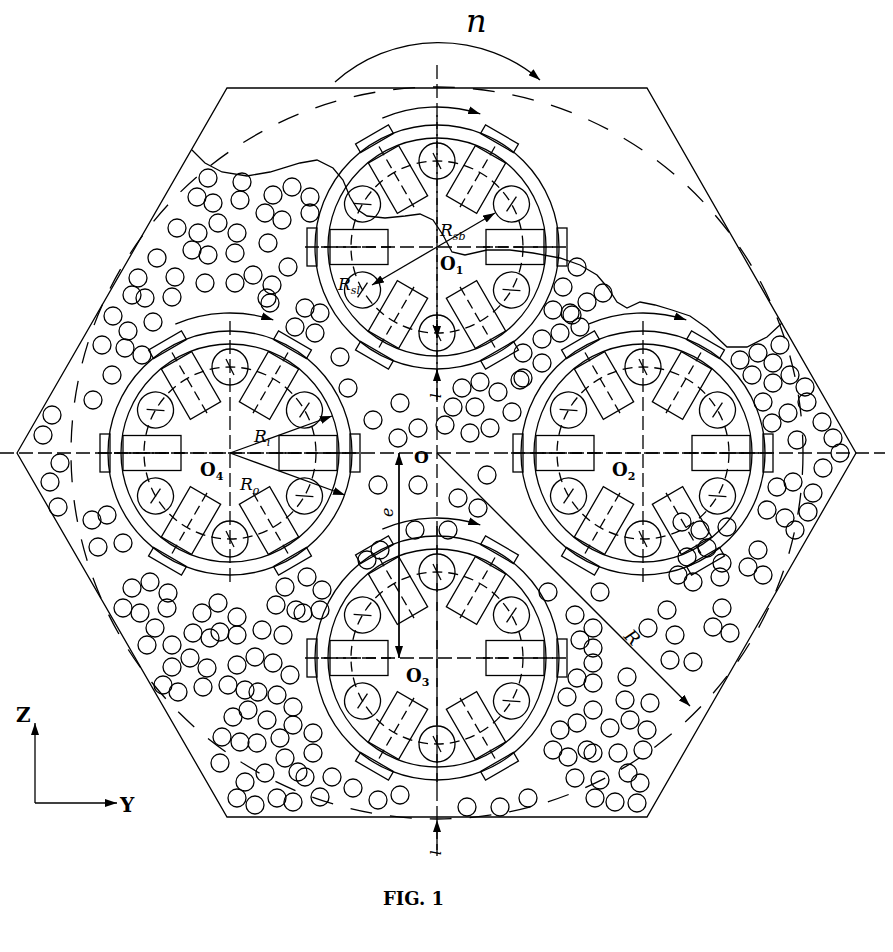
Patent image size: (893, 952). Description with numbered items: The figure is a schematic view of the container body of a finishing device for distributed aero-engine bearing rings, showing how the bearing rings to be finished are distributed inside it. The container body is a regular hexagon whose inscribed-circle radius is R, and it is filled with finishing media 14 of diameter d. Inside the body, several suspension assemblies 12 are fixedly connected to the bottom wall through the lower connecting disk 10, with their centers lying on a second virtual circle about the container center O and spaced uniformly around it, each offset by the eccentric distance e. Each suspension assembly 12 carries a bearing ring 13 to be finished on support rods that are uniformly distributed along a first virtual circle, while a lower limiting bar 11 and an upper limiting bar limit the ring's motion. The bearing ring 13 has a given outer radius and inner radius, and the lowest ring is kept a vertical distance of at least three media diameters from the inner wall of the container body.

The lower connecting disk 10 is at (630, 228).
The lower limiting bar 11 is at (652, 398).
The suspension assembly 12 is at (717, 500).
The bearing ring to be finished 13 is at (650, 573).
The finishing media 14 is at (648, 735).